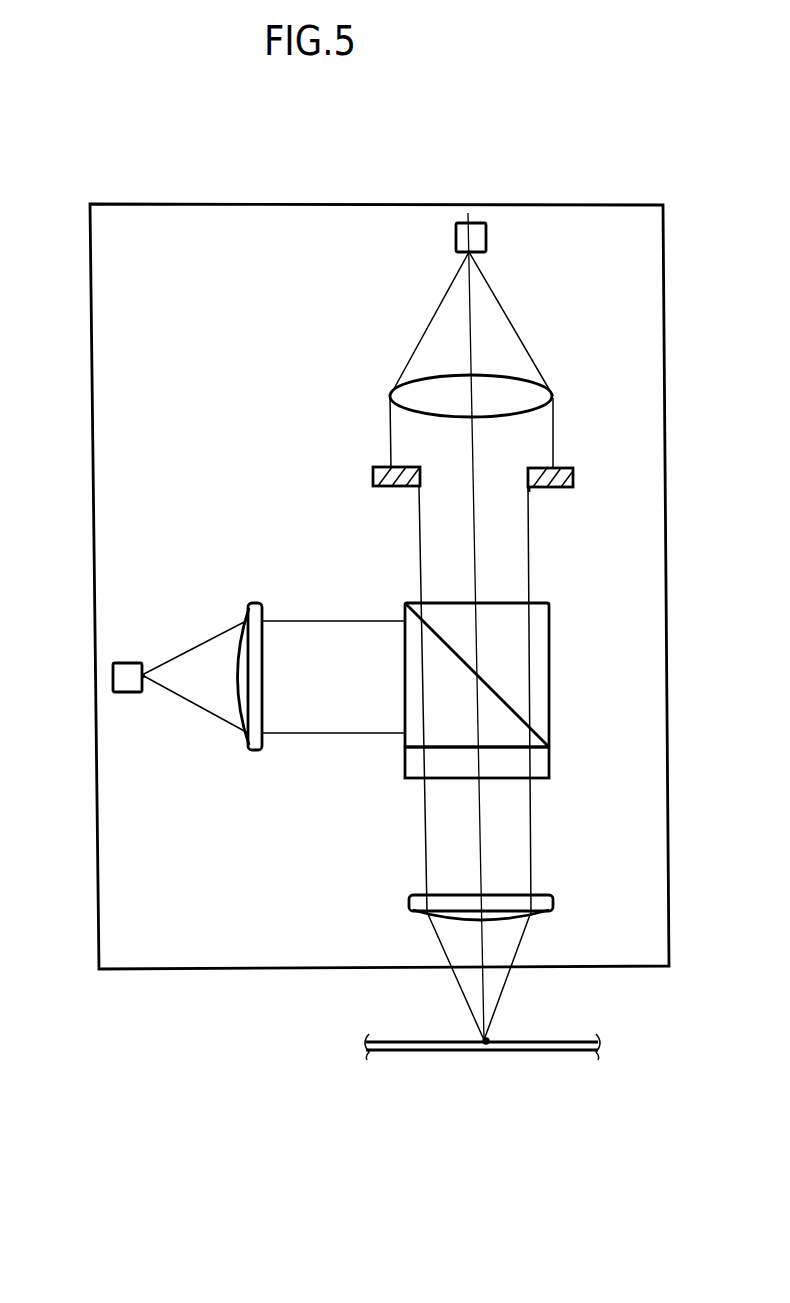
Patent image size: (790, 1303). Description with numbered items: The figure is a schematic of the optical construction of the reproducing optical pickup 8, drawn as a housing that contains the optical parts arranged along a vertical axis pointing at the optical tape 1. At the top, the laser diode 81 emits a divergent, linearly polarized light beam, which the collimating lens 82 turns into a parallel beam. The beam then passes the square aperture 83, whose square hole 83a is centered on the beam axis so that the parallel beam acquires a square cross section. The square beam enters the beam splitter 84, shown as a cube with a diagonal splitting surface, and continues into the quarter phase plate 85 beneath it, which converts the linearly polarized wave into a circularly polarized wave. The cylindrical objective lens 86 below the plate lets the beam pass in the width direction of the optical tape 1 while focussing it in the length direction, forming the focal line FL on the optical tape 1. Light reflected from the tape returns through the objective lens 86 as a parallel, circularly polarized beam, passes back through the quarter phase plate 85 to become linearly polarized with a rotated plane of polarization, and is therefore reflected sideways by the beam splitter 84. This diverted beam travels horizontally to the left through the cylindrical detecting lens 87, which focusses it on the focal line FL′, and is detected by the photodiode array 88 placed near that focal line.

The optical tape 1 is at (388, 1052).
The reproducing optical pickup 8 is at (92, 501).
The laser diode 81 is at (486, 243).
The collimating lens 82 is at (548, 393).
The square aperture 83 is at (573, 477).
The square hole 83a is at (529, 488).
The beam splitter 84 is at (549, 652).
The quarter phase plate 85 is at (549, 765).
The cylindrical objective lens 86 is at (553, 903).
The cylindrical detecting lens 87 is at (257, 750).
The photodiode array 88 is at (125, 692).
The focal line FL is at (492, 1050).
The focal line FL′ is at (150, 681).